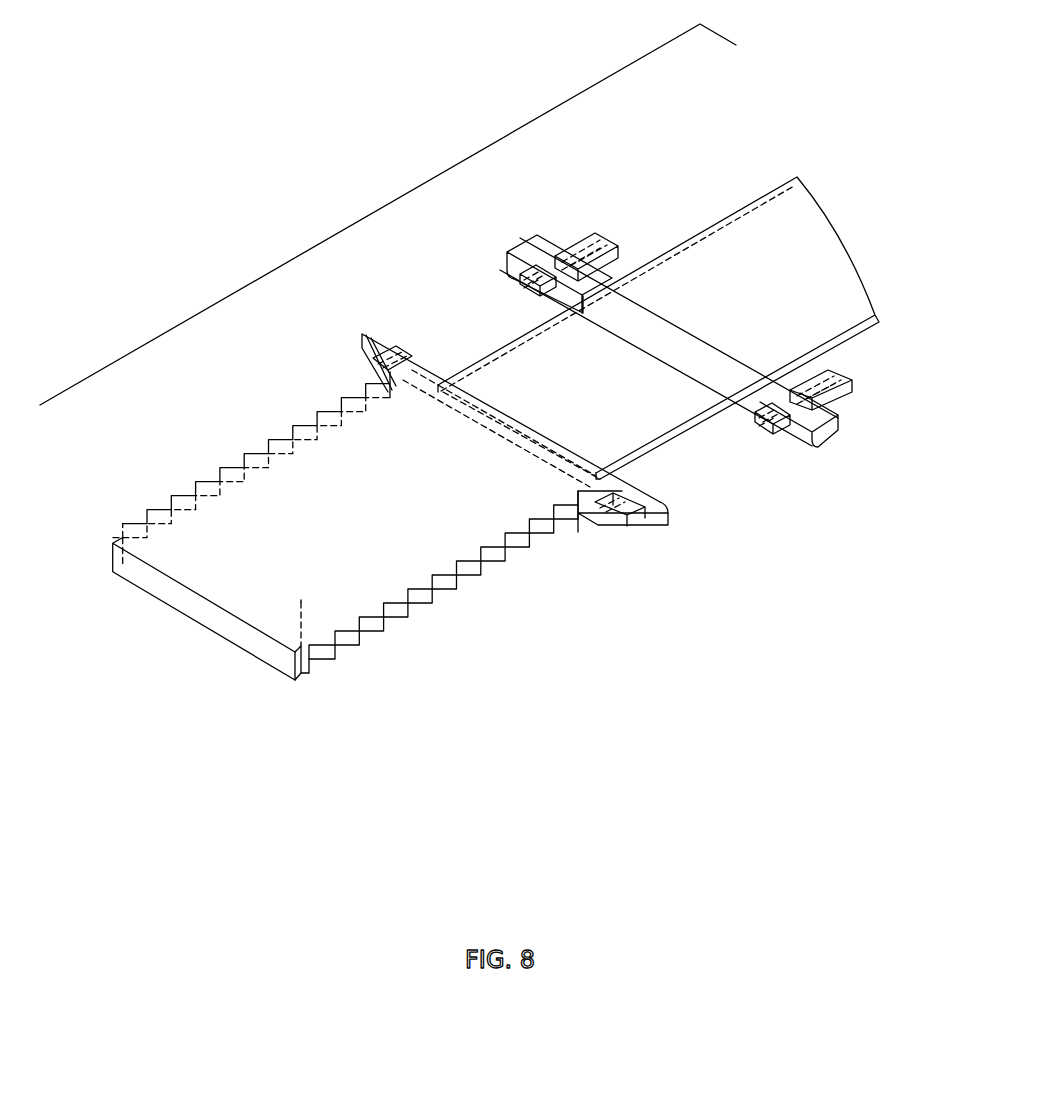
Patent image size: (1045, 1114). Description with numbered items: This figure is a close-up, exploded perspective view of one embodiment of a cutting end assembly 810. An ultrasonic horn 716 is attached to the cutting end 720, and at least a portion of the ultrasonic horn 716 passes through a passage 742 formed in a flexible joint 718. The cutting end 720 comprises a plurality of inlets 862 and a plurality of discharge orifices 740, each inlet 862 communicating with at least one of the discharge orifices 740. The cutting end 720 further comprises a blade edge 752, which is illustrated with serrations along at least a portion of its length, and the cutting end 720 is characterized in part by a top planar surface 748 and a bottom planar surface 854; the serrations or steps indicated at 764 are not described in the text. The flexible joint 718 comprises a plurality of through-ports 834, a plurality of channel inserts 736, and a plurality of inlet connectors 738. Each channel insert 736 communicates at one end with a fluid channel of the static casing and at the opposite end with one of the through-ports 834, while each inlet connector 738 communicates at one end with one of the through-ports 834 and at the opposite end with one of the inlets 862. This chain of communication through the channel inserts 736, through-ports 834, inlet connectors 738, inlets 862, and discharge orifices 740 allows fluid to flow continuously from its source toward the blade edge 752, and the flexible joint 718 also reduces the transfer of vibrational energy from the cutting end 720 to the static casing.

The ultrasonic horn 716 is at (810, 309).
The flexible joint 718 is at (853, 456).
The cutting end 720 is at (150, 653).
The channel insert 736 is at (845, 390).
The inlet connector 738 is at (500, 270).
The discharge orifice 740 is at (637, 524).
The passage 742 is at (690, 364).
The top planar surface 748 is at (190, 546).
The blade edge 752 is at (510, 630).
The steps 764 is at (294, 426).
The cutting end assembly 810 is at (380, 184).
The through-port 834 is at (520, 238).
The bottom planar surface 854 is at (301, 673).
The inlet 862 is at (365, 336).